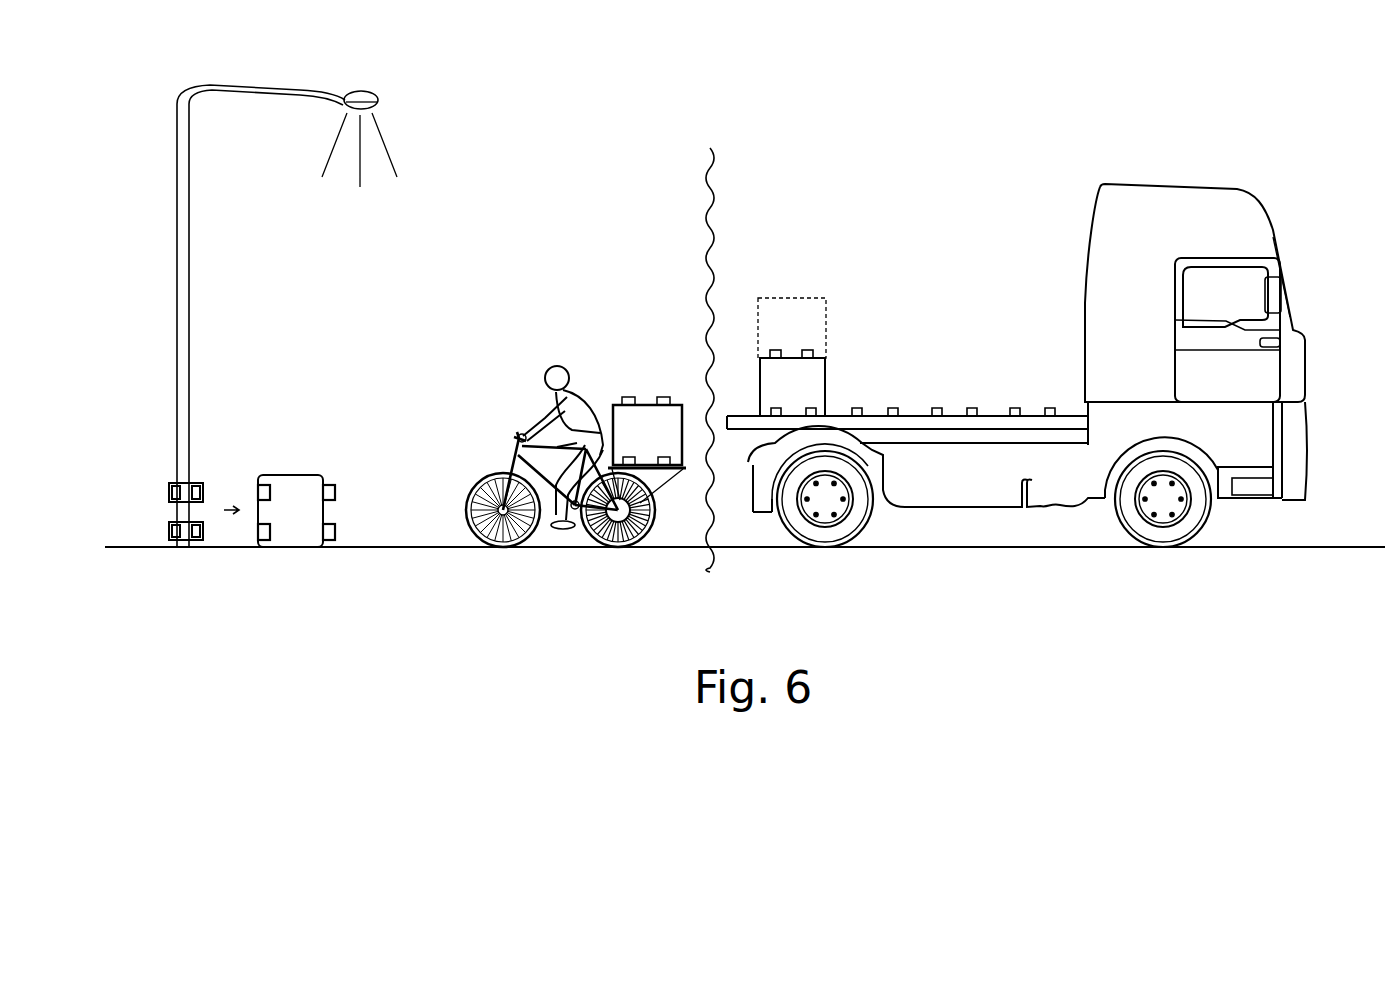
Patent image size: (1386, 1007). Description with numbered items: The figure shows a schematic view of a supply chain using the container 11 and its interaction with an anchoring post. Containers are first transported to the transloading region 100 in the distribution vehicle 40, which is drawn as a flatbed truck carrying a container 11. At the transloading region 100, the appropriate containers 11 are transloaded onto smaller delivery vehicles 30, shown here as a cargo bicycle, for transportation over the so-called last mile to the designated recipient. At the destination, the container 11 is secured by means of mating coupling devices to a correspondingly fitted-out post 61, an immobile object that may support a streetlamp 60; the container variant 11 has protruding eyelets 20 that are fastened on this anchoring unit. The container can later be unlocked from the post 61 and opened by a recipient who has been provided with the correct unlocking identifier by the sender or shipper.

The container 11 is at (300, 529).
The protruding eyelets 20 is at (179, 551).
The delivery vehicle 30 is at (561, 339).
The distribution vehicle 40 is at (1083, 160).
The streetlamp 60 is at (300, 286).
The post 61 is at (186, 277).
The transloading region 100 is at (718, 204).